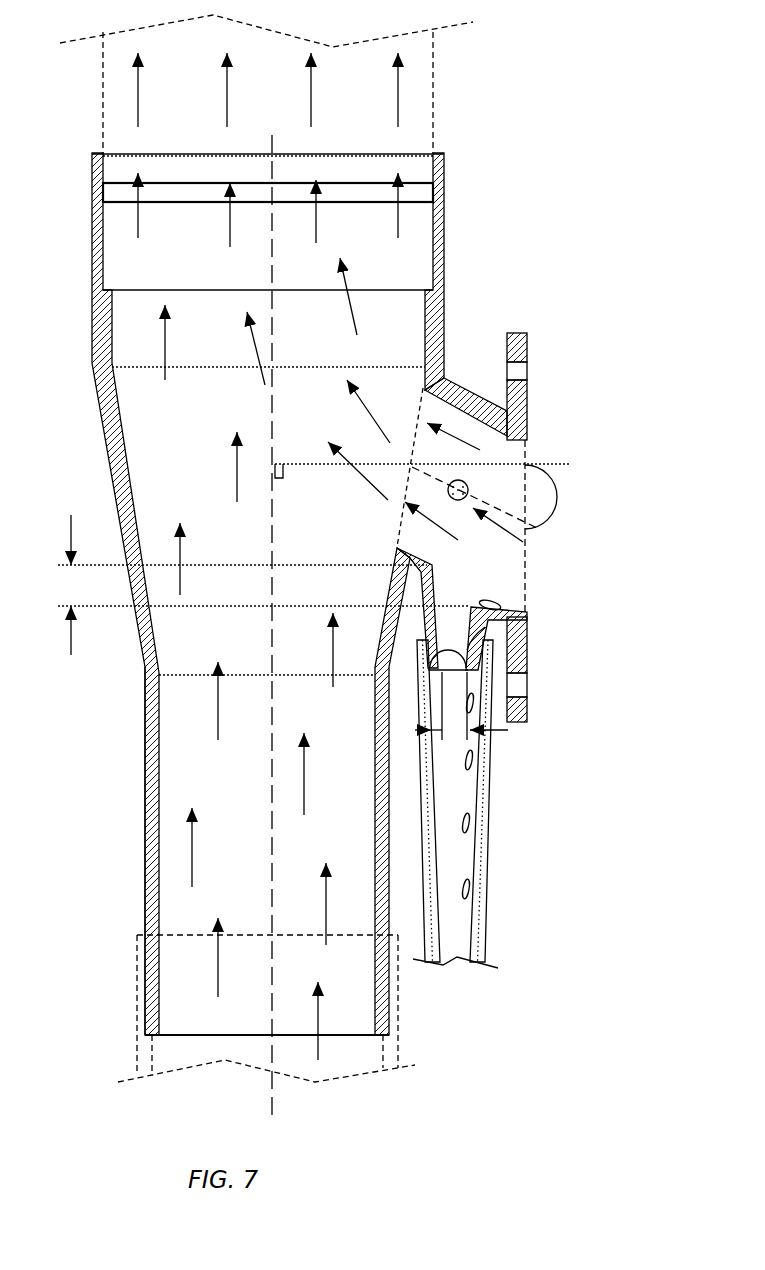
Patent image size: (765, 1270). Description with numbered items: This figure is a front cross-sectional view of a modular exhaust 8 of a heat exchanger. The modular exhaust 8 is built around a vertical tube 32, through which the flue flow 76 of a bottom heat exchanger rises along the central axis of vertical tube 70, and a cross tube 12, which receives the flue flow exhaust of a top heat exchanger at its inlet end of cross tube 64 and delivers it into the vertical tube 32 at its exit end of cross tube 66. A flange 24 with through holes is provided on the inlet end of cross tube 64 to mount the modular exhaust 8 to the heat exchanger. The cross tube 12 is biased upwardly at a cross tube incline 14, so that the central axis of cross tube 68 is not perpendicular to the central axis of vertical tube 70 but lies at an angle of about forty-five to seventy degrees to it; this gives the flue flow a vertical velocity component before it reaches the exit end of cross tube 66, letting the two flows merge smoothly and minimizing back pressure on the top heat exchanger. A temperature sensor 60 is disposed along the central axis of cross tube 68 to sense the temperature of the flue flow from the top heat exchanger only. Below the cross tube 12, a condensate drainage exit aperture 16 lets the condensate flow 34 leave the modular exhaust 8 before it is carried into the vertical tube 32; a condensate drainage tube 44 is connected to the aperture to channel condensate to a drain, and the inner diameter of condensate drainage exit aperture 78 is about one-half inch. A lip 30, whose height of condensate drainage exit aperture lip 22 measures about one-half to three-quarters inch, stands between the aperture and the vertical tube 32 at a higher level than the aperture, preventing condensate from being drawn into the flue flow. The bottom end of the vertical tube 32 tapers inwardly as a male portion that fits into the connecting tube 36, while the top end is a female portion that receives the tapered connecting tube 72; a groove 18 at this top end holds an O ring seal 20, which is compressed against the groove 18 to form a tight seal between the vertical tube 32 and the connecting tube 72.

The modular exhaust 8 is at (138, 810).
The cross tube 12 is at (457, 382).
The cross tube incline 14 is at (555, 495).
The condensate drainage exit aperture 16 is at (485, 627).
The groove 18 is at (444, 166).
The O ring seal 20 is at (437, 192).
The height of condensate drainage exit aperture lip 22 is at (87, 596).
The flange 24 is at (527, 347).
The lip 30 is at (403, 567).
The vertical tube 32 is at (147, 708).
The condensate flow 34 is at (428, 642).
The connecting tube 36 is at (137, 1048).
The condensate drainage tube 44 is at (485, 867).
The temperature sensor 60 is at (463, 481).
The inlet end of cross tube 64 is at (527, 588).
The exit end of cross tube 66 is at (397, 535).
The central axis of cross tube 68 is at (537, 529).
The central axis of vertical tube 70 is at (270, 1090).
The connecting tube 72 is at (103, 86).
The flue flow 76 is at (398, 93).
The inner diameter of condensate drainage exit aperture 78 is at (492, 736).